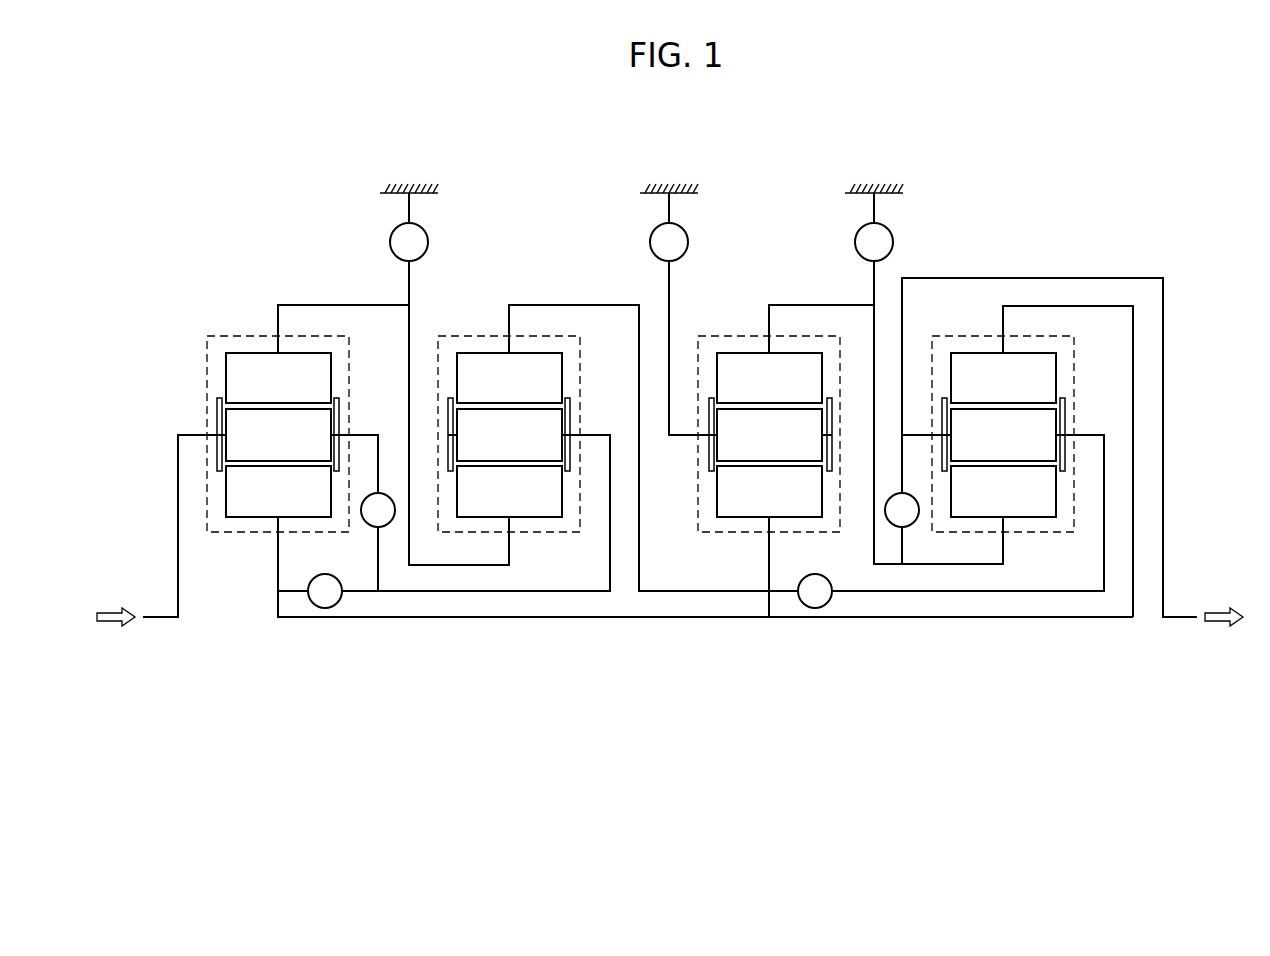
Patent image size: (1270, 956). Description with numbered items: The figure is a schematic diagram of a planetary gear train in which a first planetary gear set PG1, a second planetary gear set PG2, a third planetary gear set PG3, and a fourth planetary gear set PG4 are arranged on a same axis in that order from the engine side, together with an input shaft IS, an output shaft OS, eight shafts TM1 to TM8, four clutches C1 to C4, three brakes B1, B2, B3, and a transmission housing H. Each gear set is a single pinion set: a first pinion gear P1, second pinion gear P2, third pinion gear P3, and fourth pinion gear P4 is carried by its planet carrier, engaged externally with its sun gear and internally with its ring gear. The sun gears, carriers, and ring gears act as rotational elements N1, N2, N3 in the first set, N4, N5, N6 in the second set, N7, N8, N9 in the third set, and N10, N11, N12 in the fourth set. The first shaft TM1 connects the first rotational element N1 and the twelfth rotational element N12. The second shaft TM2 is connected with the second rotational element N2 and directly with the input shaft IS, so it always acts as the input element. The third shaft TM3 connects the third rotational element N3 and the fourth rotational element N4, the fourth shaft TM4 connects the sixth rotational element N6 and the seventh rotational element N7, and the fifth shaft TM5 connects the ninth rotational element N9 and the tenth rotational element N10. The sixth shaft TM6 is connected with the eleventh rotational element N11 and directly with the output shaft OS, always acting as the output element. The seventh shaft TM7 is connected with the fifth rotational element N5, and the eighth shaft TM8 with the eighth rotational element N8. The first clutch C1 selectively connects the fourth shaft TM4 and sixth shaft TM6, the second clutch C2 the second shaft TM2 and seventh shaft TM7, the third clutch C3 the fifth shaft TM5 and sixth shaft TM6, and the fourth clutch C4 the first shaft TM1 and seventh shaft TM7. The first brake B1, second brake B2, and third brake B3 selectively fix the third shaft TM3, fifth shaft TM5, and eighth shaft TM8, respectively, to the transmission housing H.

The first planetary gear set PG1 is at (247, 546).
The second planetary gear set PG2 is at (541, 546).
The third planetary gear set PG3 is at (734, 546).
The fourth planetary gear set PG4 is at (1041, 546).
The first rotational element N1 is at (278, 491).
The second rotational element N2 is at (339, 401).
The third rotational element N3 is at (278, 378).
The fourth rotational element N4 is at (509, 491).
The fifth rotational element N5 is at (570, 401).
The sixth rotational element N6 is at (509, 378).
The seventh rotational element N7 is at (769, 491).
The eighth rotational element N8 is at (710, 471).
The ninth rotational element N9 is at (769, 378).
The tenth rotational element N10 is at (1003, 491).
The eleventh rotational element N11 is at (1065, 401).
The twelfth rotational element N12 is at (1003, 378).
The first pinion gear P1 is at (278, 435).
The second pinion gear P2 is at (509, 435).
The third pinion gear P3 is at (769, 435).
The fourth pinion gear P4 is at (1003, 435).
The first shaft TM1 is at (625, 618).
The second shaft TM2 is at (178, 433).
The third shaft TM3 is at (308, 304).
The fourth shaft TM4 is at (548, 304).
The fifth shaft TM5 is at (808, 304).
The sixth shaft TM6 is at (1104, 583).
The seventh shaft TM7 is at (433, 593).
The eighth shaft TM8 is at (669, 313).
The first clutch C1 is at (815, 591).
The second clutch C2 is at (378, 510).
The third clutch C3 is at (902, 510).
The fourth clutch C4 is at (325, 591).
The first brake B1 is at (409, 242).
The second brake B2 is at (874, 242).
The third brake B3 is at (669, 242).
The transmission housing H is at (412, 191).
The input shaft IS is at (162, 618).
The output shaft OS is at (1178, 618).